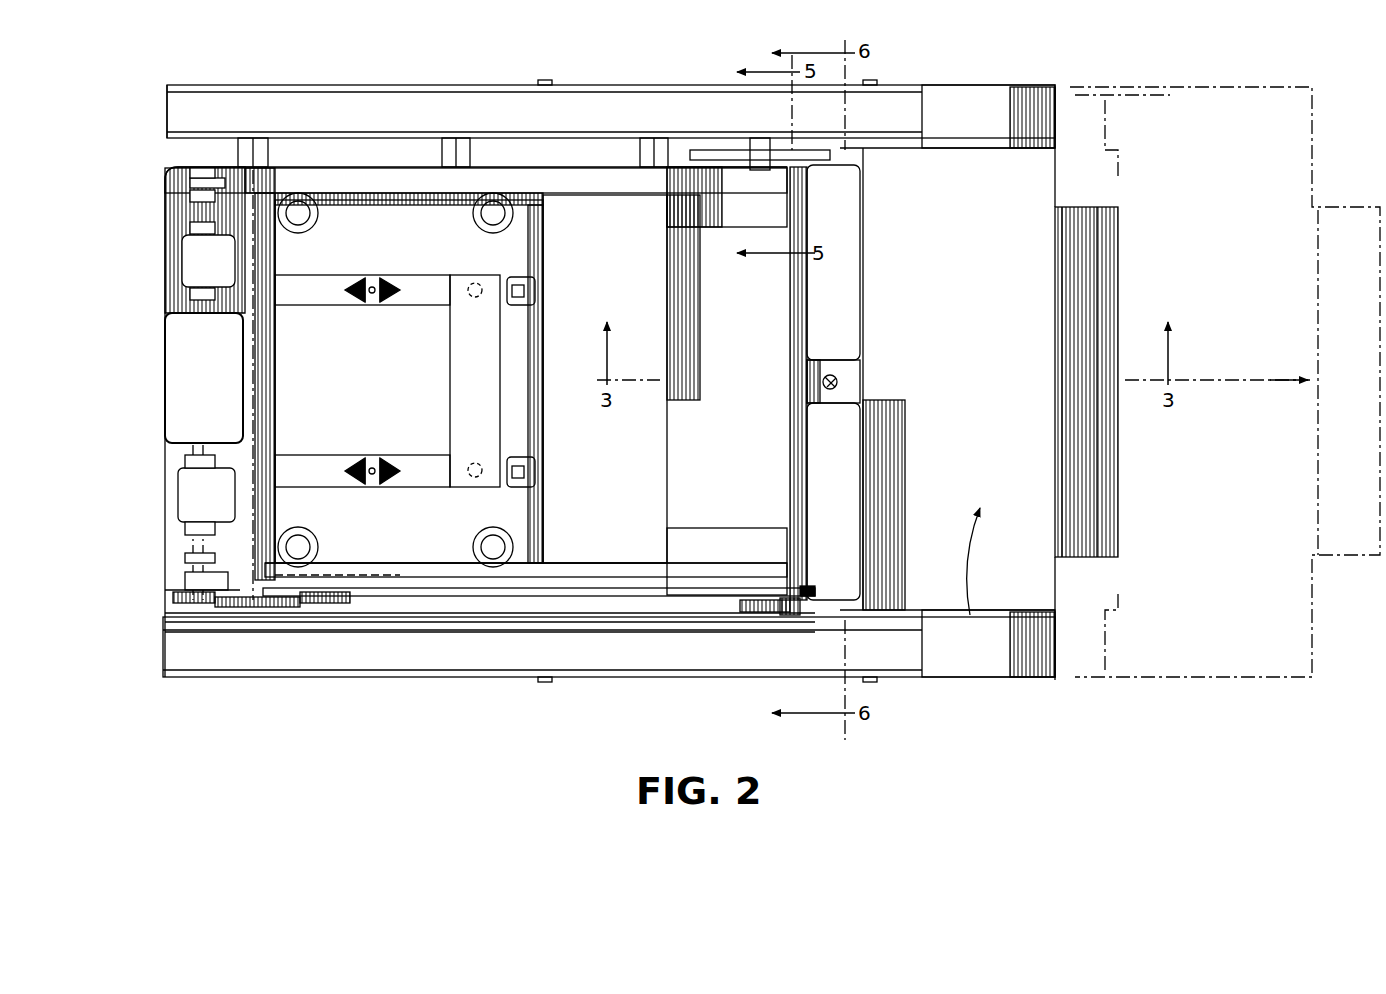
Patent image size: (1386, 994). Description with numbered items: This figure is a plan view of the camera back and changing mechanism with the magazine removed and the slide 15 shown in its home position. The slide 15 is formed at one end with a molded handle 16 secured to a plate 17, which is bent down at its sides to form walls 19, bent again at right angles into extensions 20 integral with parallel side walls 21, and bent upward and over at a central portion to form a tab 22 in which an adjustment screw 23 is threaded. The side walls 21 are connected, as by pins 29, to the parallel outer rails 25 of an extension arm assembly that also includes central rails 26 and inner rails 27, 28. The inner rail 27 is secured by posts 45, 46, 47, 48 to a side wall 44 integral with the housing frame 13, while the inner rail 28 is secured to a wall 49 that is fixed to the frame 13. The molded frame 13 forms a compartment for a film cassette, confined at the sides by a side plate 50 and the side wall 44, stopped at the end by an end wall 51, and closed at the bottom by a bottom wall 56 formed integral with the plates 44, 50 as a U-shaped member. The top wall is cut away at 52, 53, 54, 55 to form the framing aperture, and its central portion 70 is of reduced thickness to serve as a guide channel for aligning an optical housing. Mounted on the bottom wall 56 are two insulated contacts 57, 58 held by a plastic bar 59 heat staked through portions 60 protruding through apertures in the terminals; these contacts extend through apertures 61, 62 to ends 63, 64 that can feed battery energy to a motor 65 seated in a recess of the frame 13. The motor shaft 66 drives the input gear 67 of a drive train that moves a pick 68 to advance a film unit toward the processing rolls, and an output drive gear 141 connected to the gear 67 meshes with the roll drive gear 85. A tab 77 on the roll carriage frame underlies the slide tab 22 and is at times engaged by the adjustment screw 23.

The housing frame 13 is at (170, 265).
The slide 15 is at (972, 576).
The handle 16 is at (1110, 283).
The plate 17 is at (1008, 353).
The walls 19 is at (1022, 153).
The extensions 20 is at (1040, 122).
The side walls 21 is at (965, 85).
The tab 22 is at (845, 362).
The adjustment screw 23 is at (838, 384).
The outer rails 25 is at (455, 85).
The central rails 26 is at (388, 108).
The inner rail 27 is at (282, 135).
The inner rail 28 is at (282, 632).
The pins 29 is at (548, 80).
The side wall 44 is at (378, 182).
The post 45 is at (268, 153).
The post 46 is at (470, 153).
The post 47 is at (640, 153).
The post 48 is at (758, 172).
The wall 49 is at (170, 613).
The side plate 50 is at (600, 588).
The end wall 51 is at (275, 347).
The cut away portion 52 is at (630, 197).
The cut away portion 53 is at (667, 337).
The cut away portion 54 is at (385, 565).
The cut away portion 55 is at (275, 417).
The bottom wall 56 is at (545, 343).
The contact 57 is at (410, 290).
The contact 58 is at (415, 462).
The plastic bar 59 is at (450, 360).
The protruding portions 60 is at (478, 283).
The aperture 61 is at (537, 280).
The aperture 62 is at (537, 465).
The terminal end 63 is at (537, 297).
The terminal end 64 is at (537, 485).
The motor 65 is at (175, 362).
The shaft 66 is at (190, 490).
The input gear 67 is at (200, 605).
The pick 68 is at (335, 570).
The central portion 70 is at (645, 379).
The tab 77 is at (814, 360).
The drive gear 85 is at (808, 588).
The output drive gear 141 is at (748, 615).